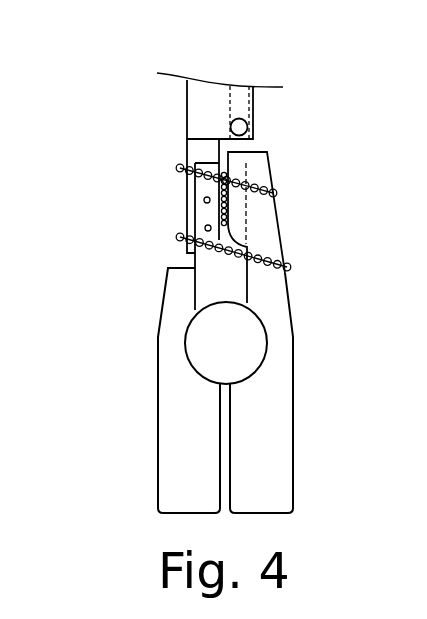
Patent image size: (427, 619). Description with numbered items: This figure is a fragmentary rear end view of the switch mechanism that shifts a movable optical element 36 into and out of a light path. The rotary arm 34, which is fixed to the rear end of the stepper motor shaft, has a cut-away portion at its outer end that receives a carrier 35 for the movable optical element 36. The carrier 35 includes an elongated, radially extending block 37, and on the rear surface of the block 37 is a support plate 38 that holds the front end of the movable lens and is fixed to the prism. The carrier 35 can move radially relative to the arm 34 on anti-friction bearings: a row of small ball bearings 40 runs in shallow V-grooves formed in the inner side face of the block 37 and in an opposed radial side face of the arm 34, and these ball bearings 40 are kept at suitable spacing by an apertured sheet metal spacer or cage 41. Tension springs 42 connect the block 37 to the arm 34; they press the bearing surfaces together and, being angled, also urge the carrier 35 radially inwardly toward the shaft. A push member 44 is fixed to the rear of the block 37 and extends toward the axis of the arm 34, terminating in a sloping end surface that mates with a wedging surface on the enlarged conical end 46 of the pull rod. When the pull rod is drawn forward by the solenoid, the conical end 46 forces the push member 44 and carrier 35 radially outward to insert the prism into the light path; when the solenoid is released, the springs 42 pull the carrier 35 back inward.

The rotary arm 34 is at (258, 168).
The carrier 35 is at (186, 195).
The movable optical element 36 is at (252, 102).
The block 37 is at (193, 147).
The support plate 38 is at (193, 115).
The ball bearings 40 is at (183, 185).
The spacer or cage 41 is at (232, 160).
The tension springs 42 is at (273, 207).
The push member 44 is at (237, 288).
The enlarged conical end 46 is at (247, 357).